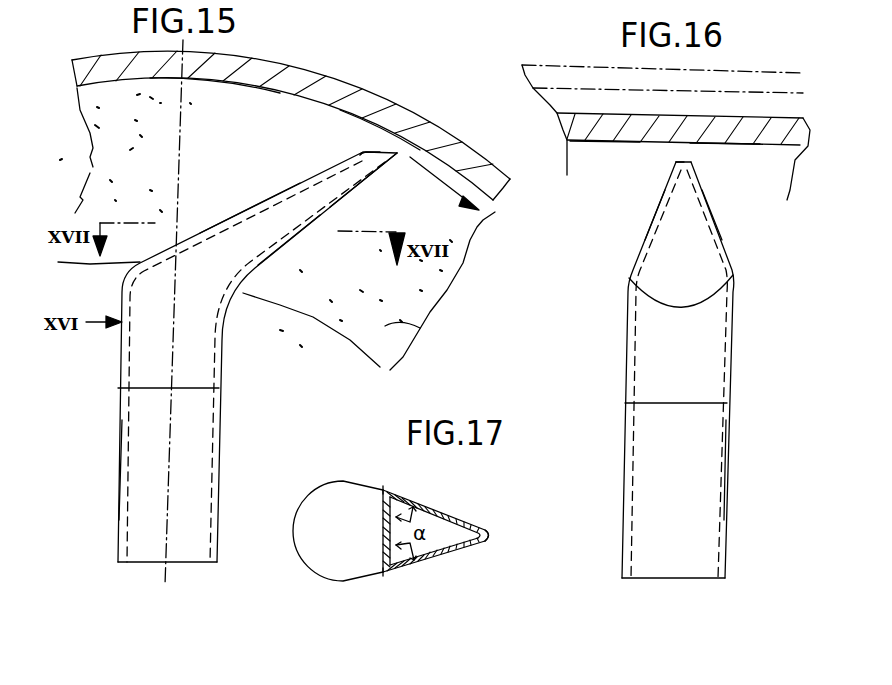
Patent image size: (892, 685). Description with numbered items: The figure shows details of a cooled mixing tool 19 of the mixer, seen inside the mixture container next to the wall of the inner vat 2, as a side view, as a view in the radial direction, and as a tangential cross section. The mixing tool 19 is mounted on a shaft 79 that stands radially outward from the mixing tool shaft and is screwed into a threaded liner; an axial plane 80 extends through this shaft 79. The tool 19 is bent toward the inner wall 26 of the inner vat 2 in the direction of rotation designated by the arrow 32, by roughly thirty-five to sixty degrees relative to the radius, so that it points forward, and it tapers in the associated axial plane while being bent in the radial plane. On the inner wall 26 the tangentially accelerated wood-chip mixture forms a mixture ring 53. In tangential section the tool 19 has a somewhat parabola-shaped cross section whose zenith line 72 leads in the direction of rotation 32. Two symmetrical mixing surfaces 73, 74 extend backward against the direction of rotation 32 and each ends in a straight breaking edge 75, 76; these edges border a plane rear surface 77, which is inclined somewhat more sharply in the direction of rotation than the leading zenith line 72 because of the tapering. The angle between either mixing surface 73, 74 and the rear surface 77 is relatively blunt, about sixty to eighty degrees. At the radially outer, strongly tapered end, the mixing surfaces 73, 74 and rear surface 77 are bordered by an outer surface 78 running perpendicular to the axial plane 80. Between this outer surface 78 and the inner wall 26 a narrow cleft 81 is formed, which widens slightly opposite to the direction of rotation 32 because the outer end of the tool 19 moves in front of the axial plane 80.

In FIG. 15, the inner vat 2 is at (300, 83).
In FIG. 16, the inner vat 2 is at (575, 127).
In FIG. 15, the mixing tool 19 is at (296, 167).
In FIG. 16, the mixing tool 19 is at (643, 202).
In FIG. 15, the inner wall 26 is at (234, 87).
In FIG. 16, the inner wall 26 is at (588, 142).
In FIG. 15, the direction of rotation 32 is at (443, 183).
In FIG. 15, the mixture ring 53 is at (392, 326).
In FIG. 15, the zenith line 72 is at (348, 193).
In FIG. 17, the zenith line 72 is at (490, 535).
In FIG. 16, the mixing surface 73 is at (645, 233).
In FIG. 17, the mixing surface 73 is at (435, 503).
In FIG. 15, the mixing surface 74 is at (267, 237).
In FIG. 17, the mixing surface 74 is at (433, 560).
In FIG. 17, the breaking edge 75 is at (383, 492).
In FIG. 15, the breaking edge 76 is at (223, 222).
In FIG. 16, the breaking edge 76 is at (719, 233).
In FIG. 17, the breaking edge 76 is at (381, 573).
In FIG. 16, the rear surface 77 is at (682, 277).
In FIG. 17, the rear surface 77 is at (383, 532).
In FIG. 15, the outer surface 78 is at (372, 148).
In FIG. 16, the outer surface 78 is at (678, 153).
In FIG. 15, the shaft 79 is at (127, 470).
In FIG. 16, the shaft 79 is at (720, 467).
In FIG. 15, the axial plane 80 is at (170, 435).
In FIG. 15, the cleft 81 is at (385, 140).
In FIG. 16, the cleft 81 is at (687, 150).